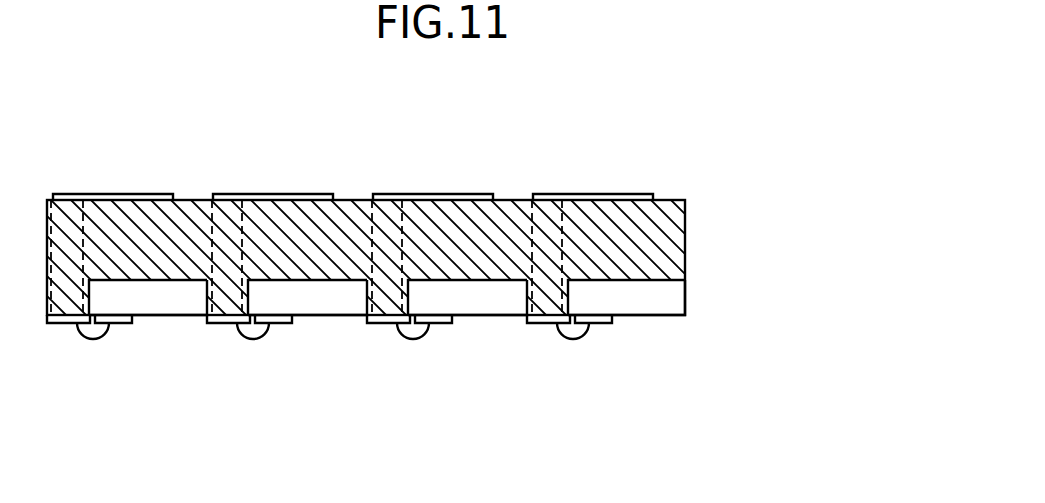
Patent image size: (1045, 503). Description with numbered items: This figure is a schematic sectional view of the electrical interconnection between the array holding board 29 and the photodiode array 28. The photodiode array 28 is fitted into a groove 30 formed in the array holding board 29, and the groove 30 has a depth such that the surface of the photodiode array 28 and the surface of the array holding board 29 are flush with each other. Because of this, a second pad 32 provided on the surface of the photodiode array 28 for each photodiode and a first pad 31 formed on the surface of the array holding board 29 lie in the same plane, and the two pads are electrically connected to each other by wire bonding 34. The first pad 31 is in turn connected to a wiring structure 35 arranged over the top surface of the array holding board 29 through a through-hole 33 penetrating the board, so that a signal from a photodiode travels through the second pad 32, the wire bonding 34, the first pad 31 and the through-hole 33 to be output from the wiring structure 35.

The photodiode array 28 is at (655, 308).
The array holding board 29 is at (670, 220).
The groove 30 is at (617, 283).
The first pad 31 is at (538, 326).
The second pad 32 is at (602, 326).
The through-hole 33 is at (540, 228).
The wire bonding 34 is at (573, 340).
The wiring structure 35 is at (595, 200).